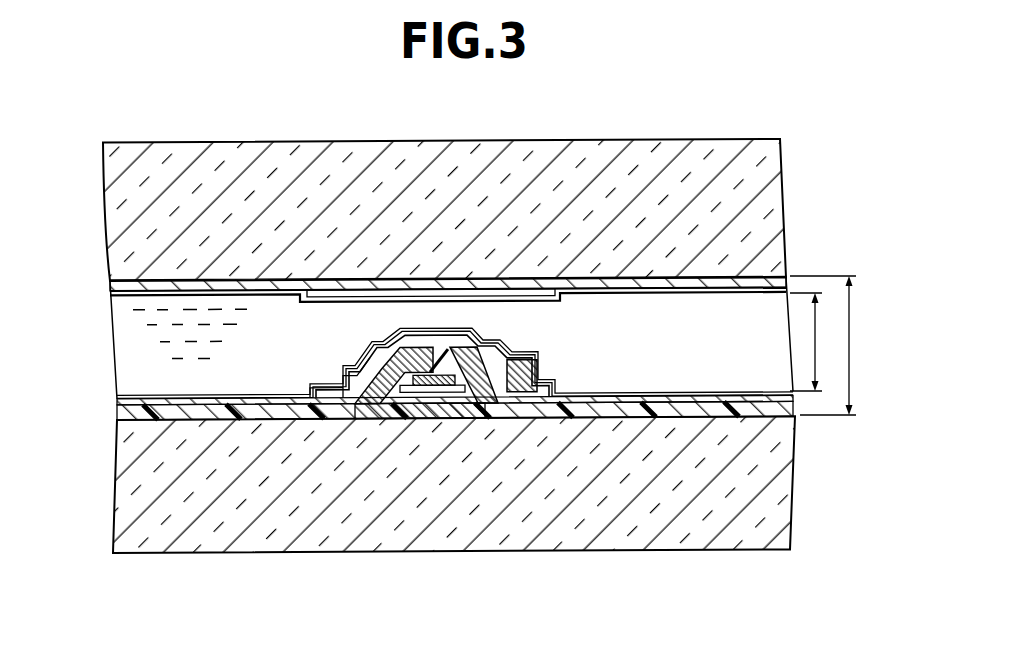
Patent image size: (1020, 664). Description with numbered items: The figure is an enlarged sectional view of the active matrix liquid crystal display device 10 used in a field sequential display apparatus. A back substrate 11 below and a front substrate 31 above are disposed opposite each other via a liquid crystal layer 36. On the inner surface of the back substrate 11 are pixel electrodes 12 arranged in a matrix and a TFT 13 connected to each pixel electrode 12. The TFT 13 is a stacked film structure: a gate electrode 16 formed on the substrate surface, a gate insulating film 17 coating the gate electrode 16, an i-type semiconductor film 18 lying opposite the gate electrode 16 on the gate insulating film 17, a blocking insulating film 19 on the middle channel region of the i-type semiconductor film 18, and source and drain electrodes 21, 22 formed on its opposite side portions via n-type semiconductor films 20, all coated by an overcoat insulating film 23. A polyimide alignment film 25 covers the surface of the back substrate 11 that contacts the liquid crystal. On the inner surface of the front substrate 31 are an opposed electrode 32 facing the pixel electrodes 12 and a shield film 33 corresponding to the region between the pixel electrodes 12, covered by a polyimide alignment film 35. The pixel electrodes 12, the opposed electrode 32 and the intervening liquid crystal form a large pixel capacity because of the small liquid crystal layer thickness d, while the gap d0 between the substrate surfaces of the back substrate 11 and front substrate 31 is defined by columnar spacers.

The active matrix liquid crystal display device 10 is at (742, 136).
The back substrate 11 is at (757, 470).
The pixel electrode 12 is at (205, 402).
The TFT 13 is at (556, 360).
The gate electrode 16 is at (448, 395).
The gate insulating film 17 is at (372, 410).
The i-type semiconductor film 18 is at (490, 404).
The blocking insulating film 19 is at (420, 382).
The n-type semiconductor film 20 is at (400, 352).
The source electrode 21 is at (487, 345).
The drain electrode 22 is at (360, 362).
The overcoat insulating film 23 is at (313, 385).
The alignment film 25 is at (660, 395).
The front substrate 31 is at (757, 216).
The opposed electrode 32 is at (655, 280).
The shield film 33 is at (452, 280).
The alignment film 35 is at (720, 296).
The liquid crystal layer 36 is at (127, 342).
The liquid crystal layer thickness d is at (812, 342).
The gap d0 is at (835, 345).